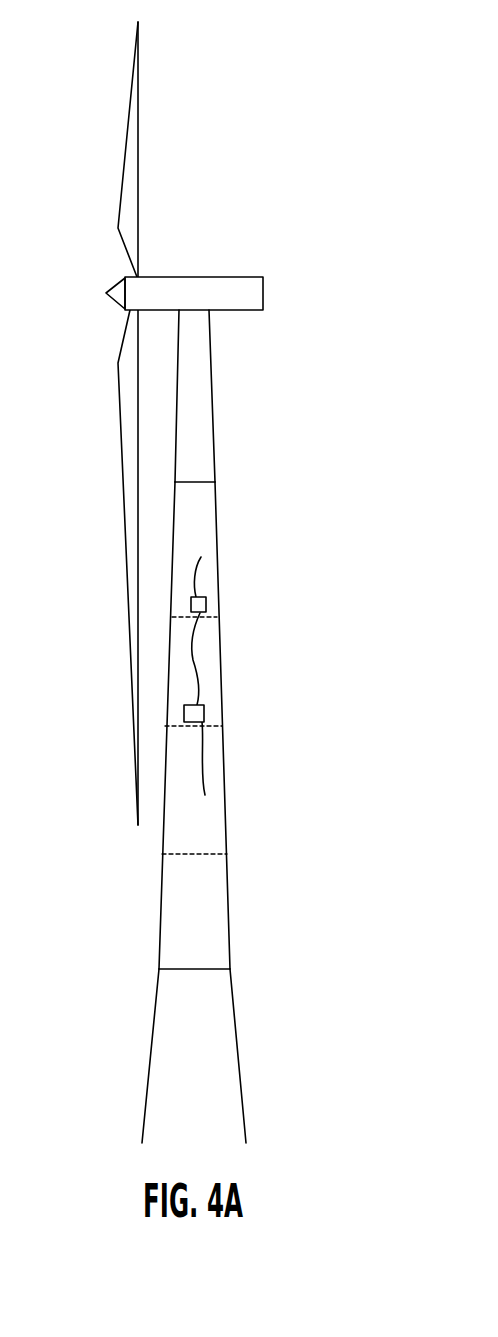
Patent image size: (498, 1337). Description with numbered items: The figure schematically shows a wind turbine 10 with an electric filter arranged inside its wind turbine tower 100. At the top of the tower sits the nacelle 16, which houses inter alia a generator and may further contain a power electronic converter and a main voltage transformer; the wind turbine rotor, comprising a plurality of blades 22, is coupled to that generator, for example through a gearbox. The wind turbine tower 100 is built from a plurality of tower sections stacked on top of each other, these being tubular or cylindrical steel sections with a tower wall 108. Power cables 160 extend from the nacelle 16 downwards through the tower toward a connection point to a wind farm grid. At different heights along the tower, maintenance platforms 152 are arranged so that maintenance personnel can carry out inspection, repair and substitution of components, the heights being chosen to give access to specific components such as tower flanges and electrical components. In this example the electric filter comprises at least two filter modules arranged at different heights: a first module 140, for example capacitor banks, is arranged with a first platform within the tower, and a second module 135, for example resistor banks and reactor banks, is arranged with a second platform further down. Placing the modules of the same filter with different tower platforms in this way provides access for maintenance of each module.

The wind turbine 10 is at (306, 130).
The blades 22 is at (120, 204).
The nacelle 16 is at (243, 276).
The wind turbine tower 100 is at (198, 405).
The tower wall 108 is at (215, 462).
The maintenance platforms 152 is at (208, 615).
The power cables 160 is at (201, 557).
The first module 140 is at (205, 598).
The second module 135 is at (205, 715).